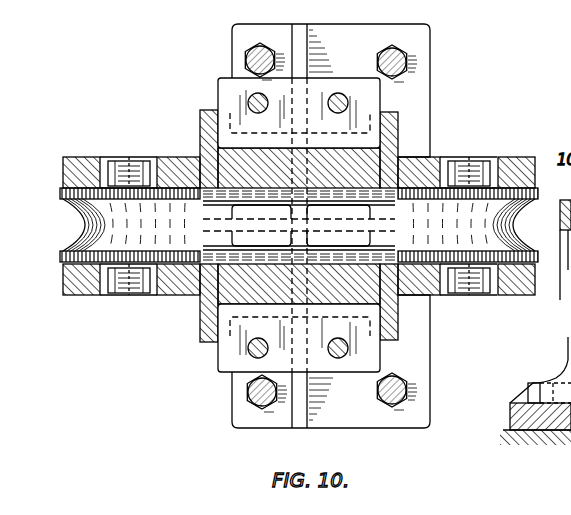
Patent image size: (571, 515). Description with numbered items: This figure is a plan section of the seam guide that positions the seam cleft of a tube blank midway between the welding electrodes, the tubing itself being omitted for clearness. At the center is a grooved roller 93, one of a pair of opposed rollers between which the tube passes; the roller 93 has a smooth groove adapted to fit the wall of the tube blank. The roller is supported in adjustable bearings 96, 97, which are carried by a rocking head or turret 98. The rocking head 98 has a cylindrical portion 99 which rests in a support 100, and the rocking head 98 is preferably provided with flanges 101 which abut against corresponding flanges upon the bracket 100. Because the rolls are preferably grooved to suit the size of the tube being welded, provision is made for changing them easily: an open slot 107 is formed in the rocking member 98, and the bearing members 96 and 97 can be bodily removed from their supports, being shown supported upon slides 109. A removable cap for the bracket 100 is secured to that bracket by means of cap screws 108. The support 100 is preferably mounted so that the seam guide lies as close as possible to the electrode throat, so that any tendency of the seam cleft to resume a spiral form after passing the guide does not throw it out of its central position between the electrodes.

The grooved roller 93 is at (84, 295).
The adjustable bearing 96 is at (112, 160).
The adjustable bearing 97 is at (200, 150).
The rocking head 98 is at (413, 157).
The cylindrical portion 99 is at (260, 150).
The support 100 is at (333, 82).
The flanges 101 is at (200, 111).
The open slot 107 is at (240, 255).
The cap screws 108 is at (250, 98).
The slides 109 is at (157, 160).